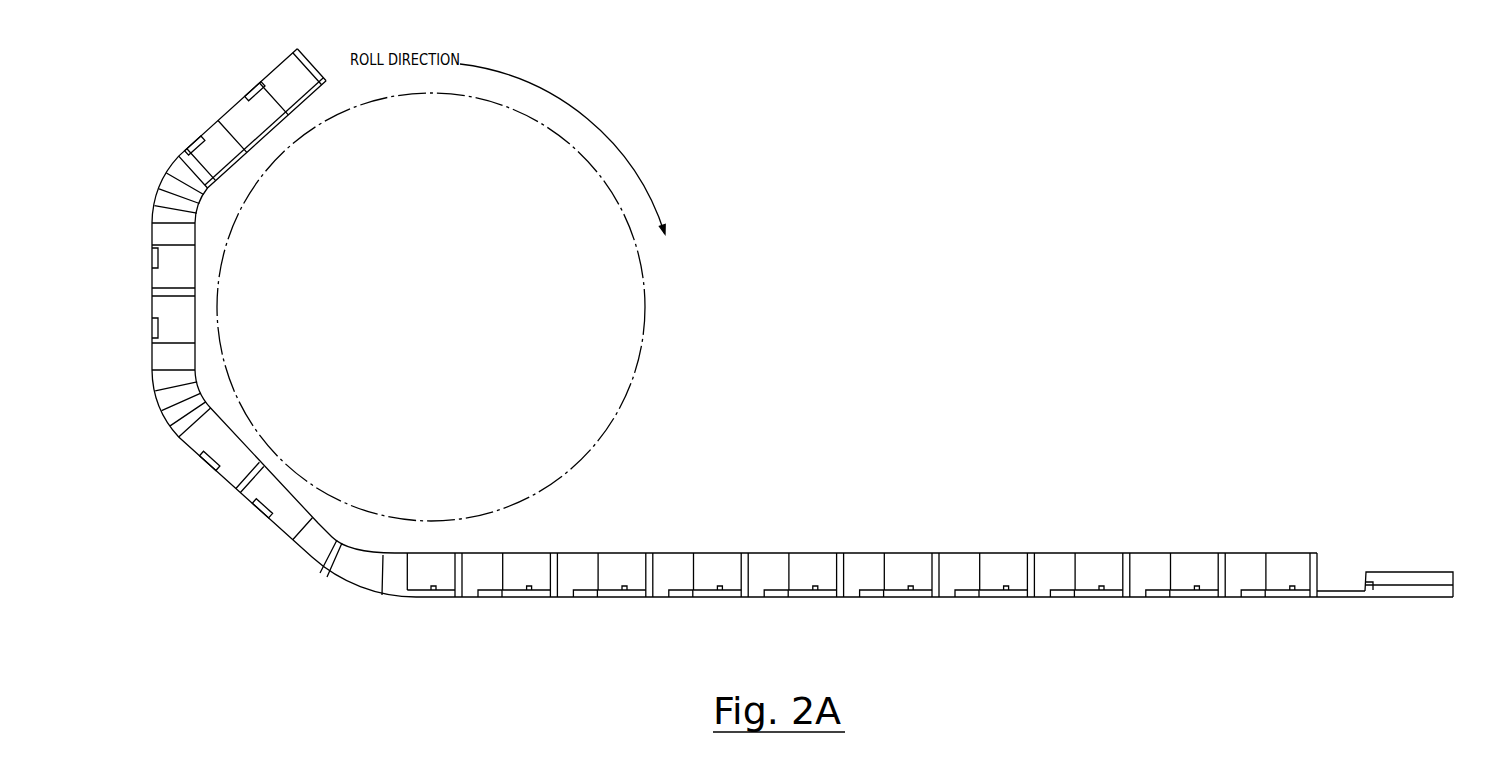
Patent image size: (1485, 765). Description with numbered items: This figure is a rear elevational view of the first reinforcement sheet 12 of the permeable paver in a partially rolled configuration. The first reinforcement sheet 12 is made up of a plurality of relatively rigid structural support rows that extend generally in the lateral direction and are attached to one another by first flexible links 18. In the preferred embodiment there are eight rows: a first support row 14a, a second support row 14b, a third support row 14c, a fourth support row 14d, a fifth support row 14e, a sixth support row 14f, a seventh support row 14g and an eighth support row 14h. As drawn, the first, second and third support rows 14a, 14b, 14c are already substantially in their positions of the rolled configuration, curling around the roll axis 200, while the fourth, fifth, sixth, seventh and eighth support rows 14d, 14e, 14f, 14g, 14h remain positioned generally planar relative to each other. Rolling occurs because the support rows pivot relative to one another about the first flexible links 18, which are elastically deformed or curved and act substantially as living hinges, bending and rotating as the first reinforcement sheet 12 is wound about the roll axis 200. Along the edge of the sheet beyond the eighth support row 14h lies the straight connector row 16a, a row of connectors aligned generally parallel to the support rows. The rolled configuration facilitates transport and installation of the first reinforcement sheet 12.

The first reinforcement sheet 12 is at (1108, 508).
The first support row 14a is at (222, 100).
The second support row 14b is at (138, 295).
The third support row 14c is at (220, 507).
The fourth support row 14d is at (452, 612).
The fifth support row 14e is at (642, 612).
The sixth support row 14f is at (833, 610).
The seventh support row 14g is at (1028, 603).
The eighth support row 14h is at (1218, 607).
The straight connector row 16a is at (1402, 547).
The first flexible links 18 is at (158, 182).
The roll axis 200 is at (432, 307).